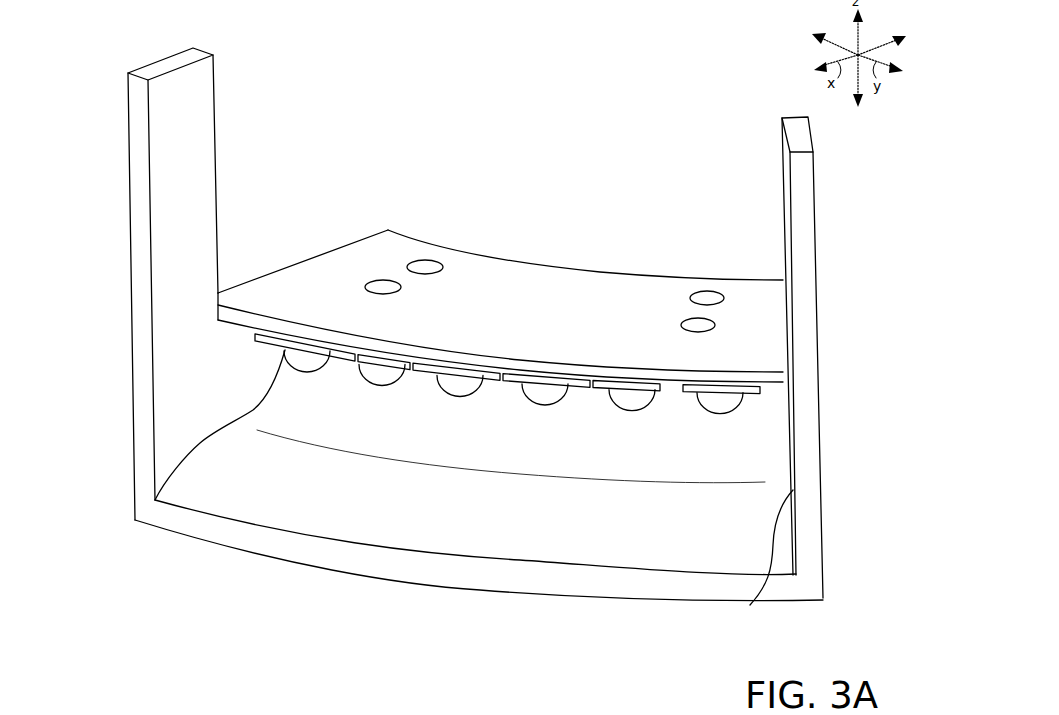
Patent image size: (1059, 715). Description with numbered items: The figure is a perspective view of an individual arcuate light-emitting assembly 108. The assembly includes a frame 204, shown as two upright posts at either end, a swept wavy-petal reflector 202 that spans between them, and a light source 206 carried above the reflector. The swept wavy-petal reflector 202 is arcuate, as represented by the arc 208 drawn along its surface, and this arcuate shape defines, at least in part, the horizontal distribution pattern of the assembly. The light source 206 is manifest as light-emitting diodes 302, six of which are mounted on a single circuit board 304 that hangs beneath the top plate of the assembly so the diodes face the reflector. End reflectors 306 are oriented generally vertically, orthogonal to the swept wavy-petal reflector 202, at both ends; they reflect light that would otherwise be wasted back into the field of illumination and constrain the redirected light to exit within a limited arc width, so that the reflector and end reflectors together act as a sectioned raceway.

The frame 204 is at (167, 56).
The arcuate light-emitting assembly 108 is at (555, 264).
The circuit board 304 is at (580, 338).
The light-emitting diodes 302 is at (612, 403).
The light source 206 is at (630, 424).
The end reflector 306 is at (750, 605).
The arc 208 is at (297, 440).
The swept wavy-petal reflector 202 is at (383, 532).